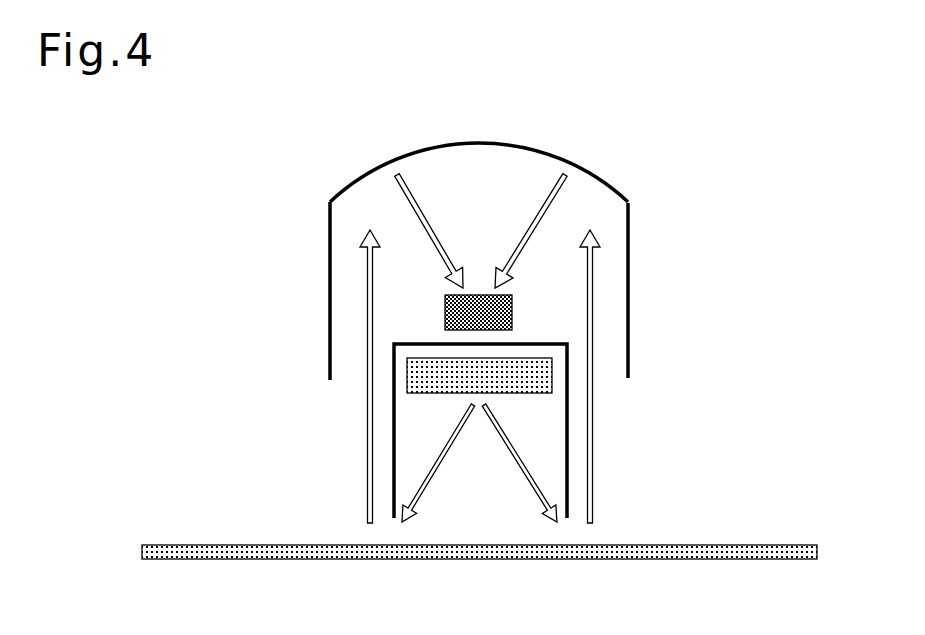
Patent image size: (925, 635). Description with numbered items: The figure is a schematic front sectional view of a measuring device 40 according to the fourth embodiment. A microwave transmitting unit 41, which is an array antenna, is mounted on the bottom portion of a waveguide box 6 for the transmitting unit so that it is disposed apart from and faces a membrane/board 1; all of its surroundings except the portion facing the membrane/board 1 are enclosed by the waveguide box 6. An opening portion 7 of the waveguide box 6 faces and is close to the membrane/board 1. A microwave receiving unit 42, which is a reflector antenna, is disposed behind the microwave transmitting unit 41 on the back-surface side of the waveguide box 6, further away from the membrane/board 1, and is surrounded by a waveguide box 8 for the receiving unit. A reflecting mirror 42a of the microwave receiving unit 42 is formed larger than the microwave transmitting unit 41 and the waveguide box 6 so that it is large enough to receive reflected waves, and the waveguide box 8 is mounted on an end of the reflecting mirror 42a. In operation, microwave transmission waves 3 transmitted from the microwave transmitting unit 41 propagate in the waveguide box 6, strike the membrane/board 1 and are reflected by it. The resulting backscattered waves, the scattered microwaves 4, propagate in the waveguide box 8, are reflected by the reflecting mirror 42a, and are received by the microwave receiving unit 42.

The measuring device 40 is at (226, 224).
The waveguide box for the receiving unit 8 is at (630, 233).
The reflecting mirror 42a is at (366, 174).
The scattered microwaves 4 is at (412, 212).
The microwave receiving unit 42 is at (478, 294).
The microwave transmitting unit 41 is at (521, 358).
The waveguide box for the transmitting unit 6 is at (570, 463).
The microwave transmission waves 3 is at (440, 454).
The membrane/board 1 is at (730, 544).
The opening portion 7 is at (488, 523).